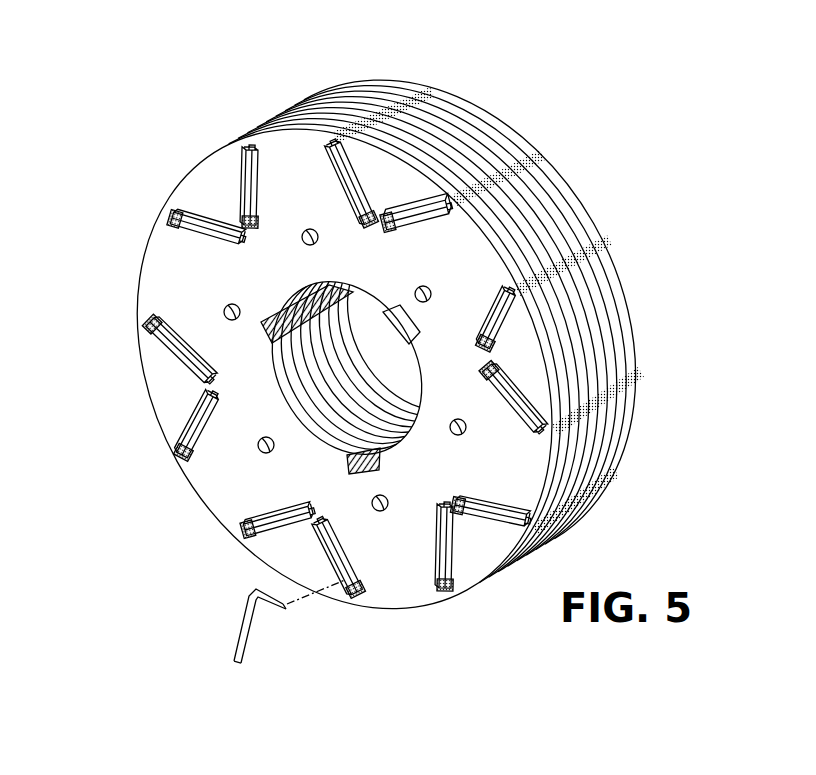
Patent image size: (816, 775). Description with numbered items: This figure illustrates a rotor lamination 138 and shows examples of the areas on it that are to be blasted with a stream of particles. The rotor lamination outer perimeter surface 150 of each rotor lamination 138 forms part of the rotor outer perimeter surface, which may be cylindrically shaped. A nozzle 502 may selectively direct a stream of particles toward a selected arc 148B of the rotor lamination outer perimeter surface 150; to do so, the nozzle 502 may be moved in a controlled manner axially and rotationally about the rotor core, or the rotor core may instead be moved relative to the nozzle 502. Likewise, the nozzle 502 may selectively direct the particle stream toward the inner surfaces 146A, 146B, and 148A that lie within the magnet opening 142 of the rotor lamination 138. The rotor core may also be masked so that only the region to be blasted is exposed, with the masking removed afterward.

The rotor lamination 138 is at (154, 281).
The magnet opening 142 is at (207, 430).
The inner surface 146A is at (347, 210).
The inner surface 146B is at (408, 235).
The inner surface 148A is at (238, 524).
The arc of the rotor outer perimeter surface 148B is at (430, 90).
The rotor lamination outer perimeter surface 150 is at (618, 302).
The nozzle 502 is at (232, 606).